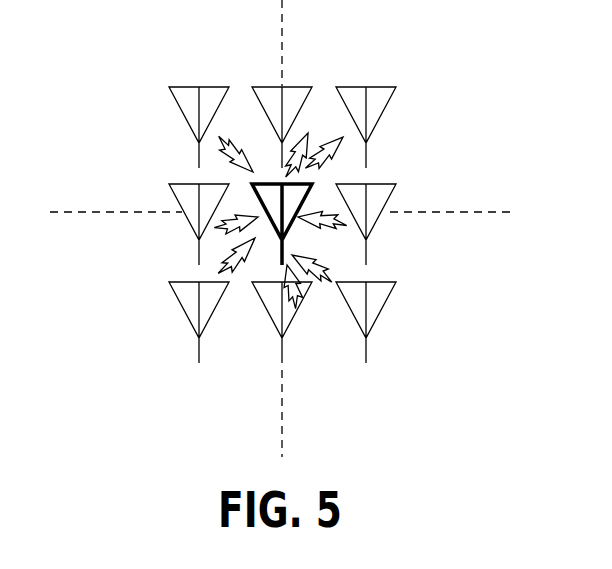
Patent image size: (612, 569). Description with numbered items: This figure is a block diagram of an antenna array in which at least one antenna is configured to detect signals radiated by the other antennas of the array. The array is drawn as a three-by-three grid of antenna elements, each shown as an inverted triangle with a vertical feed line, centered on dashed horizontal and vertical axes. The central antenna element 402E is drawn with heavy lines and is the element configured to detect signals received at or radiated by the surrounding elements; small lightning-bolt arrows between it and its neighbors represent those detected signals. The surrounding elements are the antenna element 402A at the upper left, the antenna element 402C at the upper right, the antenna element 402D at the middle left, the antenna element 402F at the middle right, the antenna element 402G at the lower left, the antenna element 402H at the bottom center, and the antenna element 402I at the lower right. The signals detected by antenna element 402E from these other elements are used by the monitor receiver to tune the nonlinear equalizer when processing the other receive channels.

The antenna element 402A is at (182, 87).
The antenna element 402C is at (383, 87).
The antenna element 402D is at (182, 184).
The antenna element 402E is at (312, 183).
The antenna element 402F is at (392, 184).
The antenna element 402G is at (182, 282).
The antenna element 402H is at (287, 337).
The antenna element 402I is at (392, 282).